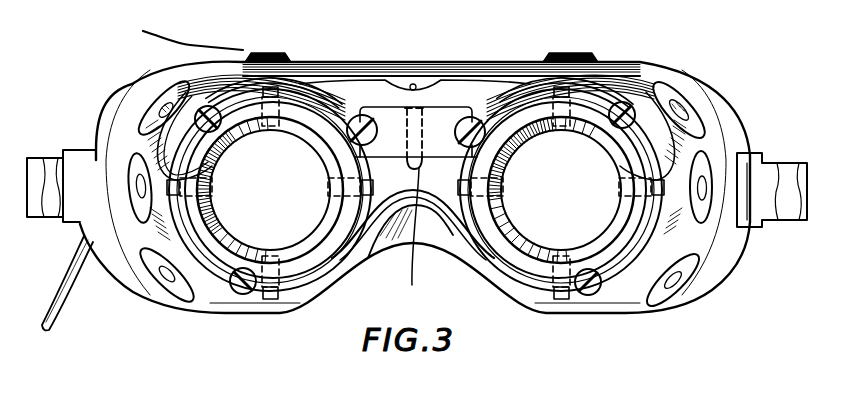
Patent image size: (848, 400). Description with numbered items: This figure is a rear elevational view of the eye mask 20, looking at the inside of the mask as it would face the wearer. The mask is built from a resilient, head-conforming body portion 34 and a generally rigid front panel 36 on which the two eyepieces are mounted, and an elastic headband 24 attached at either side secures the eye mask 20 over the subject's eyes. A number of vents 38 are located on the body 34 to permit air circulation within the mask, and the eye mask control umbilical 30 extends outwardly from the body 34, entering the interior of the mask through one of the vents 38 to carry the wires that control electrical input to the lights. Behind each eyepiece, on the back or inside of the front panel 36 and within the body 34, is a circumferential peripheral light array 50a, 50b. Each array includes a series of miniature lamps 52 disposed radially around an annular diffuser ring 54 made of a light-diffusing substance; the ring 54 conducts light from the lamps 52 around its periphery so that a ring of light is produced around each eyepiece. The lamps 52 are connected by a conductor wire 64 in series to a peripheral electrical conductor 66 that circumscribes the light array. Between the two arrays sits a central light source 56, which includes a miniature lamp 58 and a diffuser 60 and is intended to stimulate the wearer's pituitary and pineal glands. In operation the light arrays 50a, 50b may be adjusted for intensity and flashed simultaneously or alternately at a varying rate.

The eye mask 20 is at (106, 103).
The elastic headband 24 is at (43, 172).
The eye mask control umbilical 30 is at (65, 288).
The body portion 34 is at (712, 114).
The front panel 36 is at (494, 90).
The vents 38 is at (170, 93).
The left peripheral light array 50a is at (313, 274).
The right peripheral light array 50b is at (520, 276).
The miniature lamps 52 is at (272, 87).
The annular diffuser ring 54 is at (312, 116).
The central light source 56 is at (392, 118).
The miniature lamp 58 is at (412, 285).
The diffuser 60 is at (446, 118).
The conductor wire 64 is at (586, 286).
The peripheral electrical conductor 66 is at (616, 100).